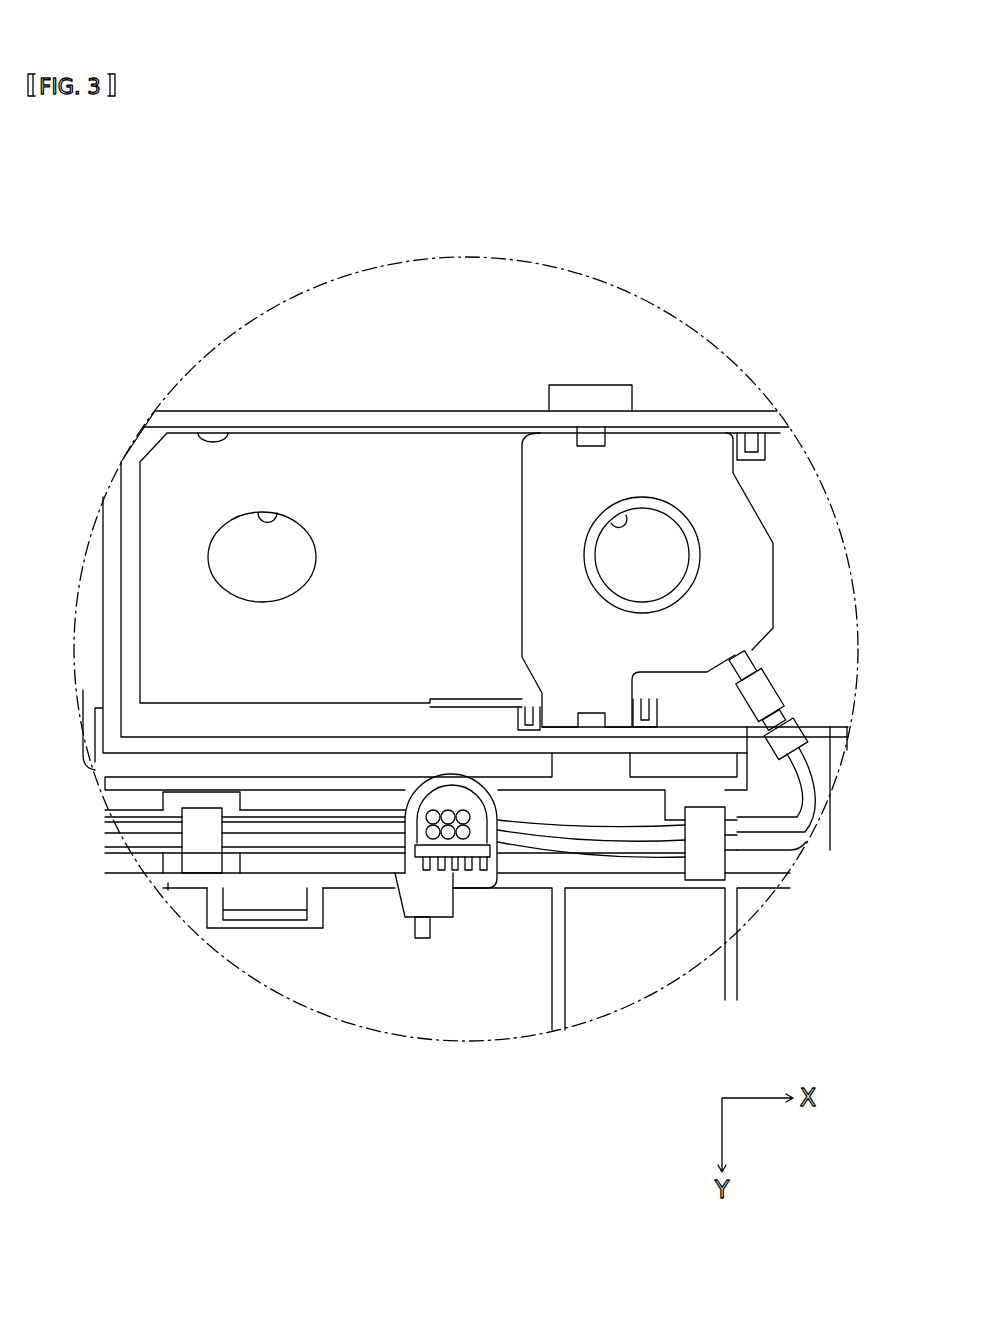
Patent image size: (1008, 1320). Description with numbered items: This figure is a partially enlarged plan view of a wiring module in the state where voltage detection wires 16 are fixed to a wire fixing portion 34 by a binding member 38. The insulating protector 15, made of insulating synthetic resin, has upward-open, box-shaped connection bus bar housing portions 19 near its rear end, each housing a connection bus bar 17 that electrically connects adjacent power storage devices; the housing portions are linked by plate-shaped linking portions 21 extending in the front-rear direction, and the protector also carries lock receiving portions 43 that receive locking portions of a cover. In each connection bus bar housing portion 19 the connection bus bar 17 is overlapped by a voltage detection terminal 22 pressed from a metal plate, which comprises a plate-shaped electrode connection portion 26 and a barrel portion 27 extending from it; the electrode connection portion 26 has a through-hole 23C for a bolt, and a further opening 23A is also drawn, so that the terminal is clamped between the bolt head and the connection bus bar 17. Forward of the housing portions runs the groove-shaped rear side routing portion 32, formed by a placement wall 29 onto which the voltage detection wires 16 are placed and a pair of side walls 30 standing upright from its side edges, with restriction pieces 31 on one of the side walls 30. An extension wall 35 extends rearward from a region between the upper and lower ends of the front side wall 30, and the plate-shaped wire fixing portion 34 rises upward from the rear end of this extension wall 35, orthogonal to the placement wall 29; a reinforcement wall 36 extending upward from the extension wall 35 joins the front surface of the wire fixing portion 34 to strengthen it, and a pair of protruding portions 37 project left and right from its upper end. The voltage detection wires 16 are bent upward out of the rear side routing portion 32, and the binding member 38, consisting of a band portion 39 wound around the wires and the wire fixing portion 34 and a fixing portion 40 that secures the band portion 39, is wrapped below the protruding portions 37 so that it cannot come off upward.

The insulating protector 15 is at (397, 409).
The voltage detection wires 16 is at (138, 847).
The connection bus bar 17 is at (165, 488).
The connection bus bar housing portion 19 is at (200, 426).
The linking portion 21 is at (725, 917).
The voltage detection terminal 22 is at (877, 312).
The hole 23A is at (266, 512).
The through-hole 23C is at (653, 507).
The electrode connection portion 26 is at (733, 503).
The barrel portion 27 is at (774, 682).
The placement wall 29 is at (253, 865).
The side wall 30 is at (168, 883).
The restriction piece 31 is at (197, 858).
The rear side routing portion 32 is at (265, 1030).
The wire fixing portion 34 is at (440, 868).
The extension wall 35 is at (460, 883).
The reinforcement wall 36 is at (452, 873).
The protruding portion 37 is at (423, 873).
The binding member 38 is at (385, 1120).
The band portion 39 is at (405, 848).
The fixing portion 40 is at (407, 892).
The lock receiving portion 43 is at (280, 928).